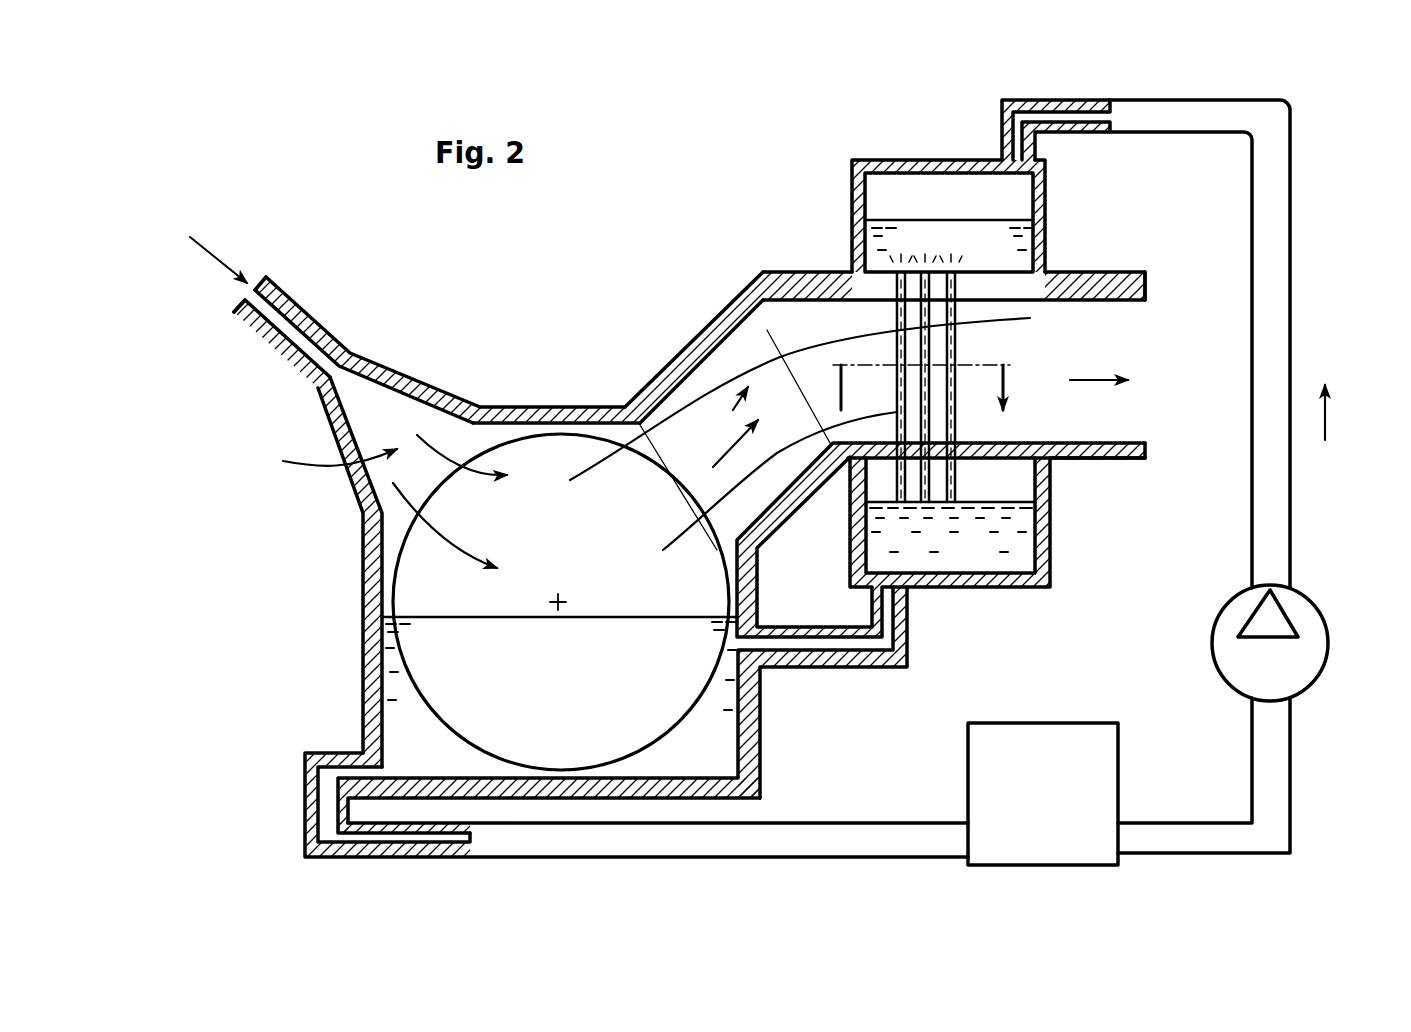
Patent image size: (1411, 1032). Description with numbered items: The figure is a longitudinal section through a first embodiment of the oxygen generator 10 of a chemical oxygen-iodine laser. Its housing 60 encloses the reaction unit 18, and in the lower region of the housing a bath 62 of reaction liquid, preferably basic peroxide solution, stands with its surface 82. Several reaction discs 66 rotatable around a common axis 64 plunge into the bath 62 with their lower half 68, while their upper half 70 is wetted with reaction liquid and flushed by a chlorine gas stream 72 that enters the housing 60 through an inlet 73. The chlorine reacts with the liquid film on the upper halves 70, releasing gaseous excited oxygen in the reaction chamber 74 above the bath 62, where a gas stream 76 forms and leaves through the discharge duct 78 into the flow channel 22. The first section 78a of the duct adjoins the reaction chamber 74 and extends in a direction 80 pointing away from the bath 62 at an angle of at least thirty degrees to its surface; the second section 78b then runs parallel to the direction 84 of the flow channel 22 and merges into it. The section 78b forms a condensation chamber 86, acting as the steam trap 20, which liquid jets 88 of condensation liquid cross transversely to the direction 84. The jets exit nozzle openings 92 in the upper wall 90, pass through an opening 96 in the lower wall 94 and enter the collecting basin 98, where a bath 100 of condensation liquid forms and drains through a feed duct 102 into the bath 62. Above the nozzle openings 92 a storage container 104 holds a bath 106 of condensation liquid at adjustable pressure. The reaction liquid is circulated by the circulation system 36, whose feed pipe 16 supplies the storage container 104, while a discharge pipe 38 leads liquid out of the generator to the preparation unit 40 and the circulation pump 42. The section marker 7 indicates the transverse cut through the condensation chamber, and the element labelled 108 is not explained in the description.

The oxygen generator 10 is at (525, 345).
The pipe 16 is at (1280, 217).
The reaction unit 18 is at (322, 464).
The steam trap 20 is at (1040, 322).
The flow channel 22 is at (1135, 318).
The reaction liquid circulation system 36 is at (750, 840).
The discharge pipe 38 is at (325, 780).
The preparation unit 40 is at (1054, 806).
The circulation pump 42 is at (1317, 642).
The housing 60 is at (573, 408).
The bath 62 is at (392, 660).
The common axis 64 is at (566, 598).
The reaction discs 66 is at (503, 455).
The lower half 68 is at (567, 753).
The upper half 70 is at (562, 524).
The chlorine gas stream 72 is at (405, 512).
The inlet 73 is at (303, 340).
The reaction chamber 74 is at (620, 403).
The gas stream 76 is at (732, 500).
The discharge duct 78 is at (768, 300).
The first section 78a is at (712, 370).
The second section 78b is at (828, 318).
The direction 80 is at (730, 463).
The surface 82 is at (423, 612).
The direction 84 is at (1099, 409).
The condensation chamber 86 is at (1007, 318).
The liquid jets 88 is at (948, 386).
The upper wall 90 is at (987, 290).
The nozzle openings 92 is at (925, 266).
The lower wall 94 is at (1023, 452).
The opening 96 is at (970, 450).
The collecting basin 98 is at (1000, 563).
The bath 100 is at (1022, 545).
The feed duct 102 is at (892, 633).
The storage container 104 is at (878, 185).
The bath 106 is at (947, 230).
The supply connector 108 is at (903, 217).
The section line 7 is at (919, 387).